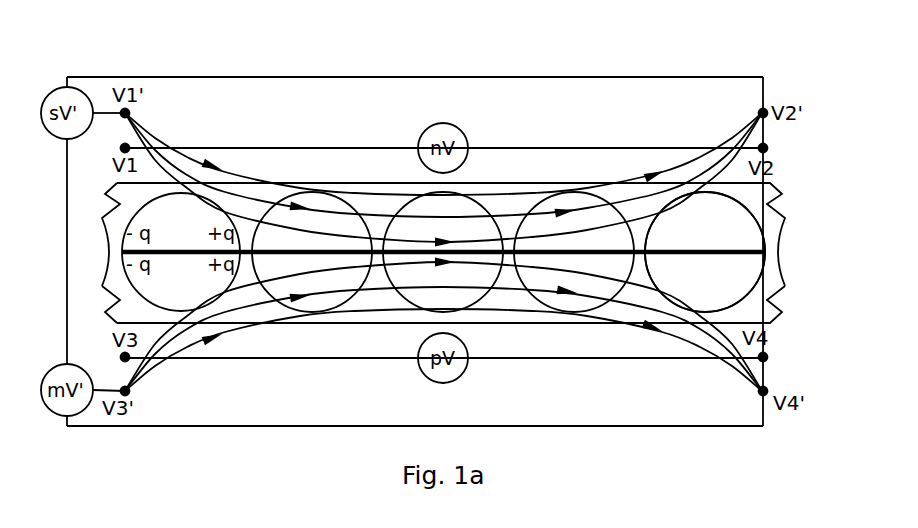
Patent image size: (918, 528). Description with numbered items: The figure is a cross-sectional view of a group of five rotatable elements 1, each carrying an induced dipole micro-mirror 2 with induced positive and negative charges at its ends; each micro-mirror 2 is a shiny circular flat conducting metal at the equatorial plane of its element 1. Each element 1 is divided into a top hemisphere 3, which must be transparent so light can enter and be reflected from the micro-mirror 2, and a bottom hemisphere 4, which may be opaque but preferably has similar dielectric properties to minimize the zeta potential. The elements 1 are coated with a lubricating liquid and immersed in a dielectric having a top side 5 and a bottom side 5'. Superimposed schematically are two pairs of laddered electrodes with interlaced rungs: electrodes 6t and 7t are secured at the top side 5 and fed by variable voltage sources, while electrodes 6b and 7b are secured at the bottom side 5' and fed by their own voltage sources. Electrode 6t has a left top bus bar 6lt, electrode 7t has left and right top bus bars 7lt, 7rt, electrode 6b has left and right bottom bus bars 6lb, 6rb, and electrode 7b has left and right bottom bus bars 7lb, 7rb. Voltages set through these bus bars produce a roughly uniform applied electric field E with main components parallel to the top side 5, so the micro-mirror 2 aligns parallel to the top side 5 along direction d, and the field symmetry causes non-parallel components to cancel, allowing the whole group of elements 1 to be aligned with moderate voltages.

The rotatable element 1 is at (196, 303).
The micro-mirror 2 is at (195, 250).
The top hemisphere 3 is at (750, 236).
The bottom hemisphere 4 is at (750, 268).
The top side 5 is at (443, 222).
The bottom side 5' is at (443, 318).
The laddered electrode with interlaced rungs 6t is at (341, 145).
The laddered electrode with interlaced rungs 6b is at (341, 385).
The left top bus bar 6lt is at (125, 148).
The left bottom bus bar 6lb is at (125, 357).
The right bottom bus bar 6rb is at (766, 356).
The laddered electrode with interlaced rungs 7t is at (341, 104).
The laddered electrode with interlaced rungs 7b is at (341, 424).
The left top bus bar 7lt is at (130, 113).
The right top bus bar 7rt is at (760, 113).
The left bottom bus bar 7lb is at (130, 392).
The right bottom bus bar 7rb is at (766, 389).
The applied electric field E is at (565, 208).
The direction of motion d is at (305, 240).